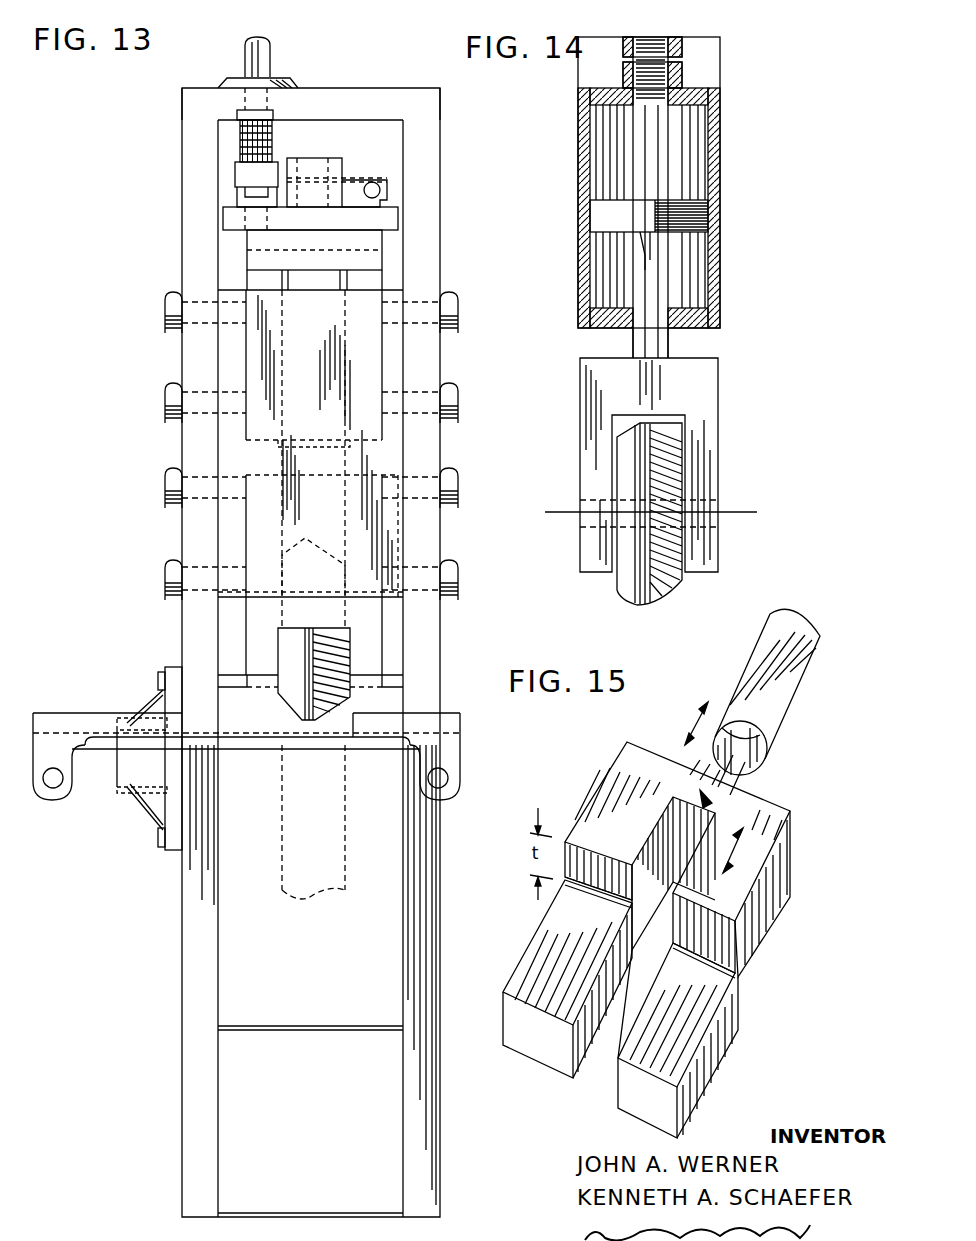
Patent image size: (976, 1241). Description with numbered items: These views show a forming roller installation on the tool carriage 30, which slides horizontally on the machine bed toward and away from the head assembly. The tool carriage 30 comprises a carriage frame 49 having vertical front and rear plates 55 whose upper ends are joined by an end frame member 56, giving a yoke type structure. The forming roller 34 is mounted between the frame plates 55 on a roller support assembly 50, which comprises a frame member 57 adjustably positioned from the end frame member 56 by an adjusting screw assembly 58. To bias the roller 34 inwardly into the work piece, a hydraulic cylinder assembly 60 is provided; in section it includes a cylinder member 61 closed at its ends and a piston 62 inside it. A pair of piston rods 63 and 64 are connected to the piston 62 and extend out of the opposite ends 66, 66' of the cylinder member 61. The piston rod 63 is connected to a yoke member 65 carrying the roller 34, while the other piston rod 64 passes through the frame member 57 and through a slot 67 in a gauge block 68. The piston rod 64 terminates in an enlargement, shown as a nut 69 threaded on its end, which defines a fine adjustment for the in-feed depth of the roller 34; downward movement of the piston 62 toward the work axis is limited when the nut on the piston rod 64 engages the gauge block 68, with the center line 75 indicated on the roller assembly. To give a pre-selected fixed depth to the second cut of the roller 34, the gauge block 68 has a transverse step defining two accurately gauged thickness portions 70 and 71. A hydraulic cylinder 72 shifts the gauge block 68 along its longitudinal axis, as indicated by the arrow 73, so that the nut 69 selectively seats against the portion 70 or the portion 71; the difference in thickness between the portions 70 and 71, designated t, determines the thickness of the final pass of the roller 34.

In FIG. 13, the tool carriage 30 is at (468, 340).
In FIG. 13, the forming roller 34 is at (350, 705).
In FIG. 14, the forming roller 34 is at (660, 585).
In FIG. 13, the carriage frame 49 is at (425, 440).
In FIG. 13, the roller support assembly 50 is at (395, 297).
In FIG. 13, the frame plates 55 is at (192, 160).
In FIG. 13, the end frame member 56 is at (372, 90).
In FIG. 13, the frame member 57 is at (400, 213).
In FIG. 13, the adjusting screw assembly 58 is at (270, 142).
In FIG. 13, the hydraulic cylinder assembly 60 is at (240, 258).
In FIG. 14, the hydraulic cylinder assembly 60 is at (728, 256).
In FIG. 14, the cylinder member 61 is at (712, 285).
In FIG. 14, the piston 62 is at (690, 217).
In FIG. 14, the piston rod 63 is at (660, 345).
In FIG. 14, the piston rod 64 is at (655, 170).
In FIG. 13, the yoke member 65 is at (430, 528).
In FIG. 14, the yoke member 65 is at (705, 398).
In FIG. 14, the cylinder end 66 is at (673, 93).
In FIG. 14, the cylinder end 66' is at (626, 332).
In FIG. 14, the slot 67 is at (682, 70).
In FIG. 15, the slot 67 is at (657, 950).
In FIG. 13, the gauge block 68 is at (350, 187).
In FIG. 14, the gauge block 68 is at (623, 67).
In FIG. 15, the gauge block 68 is at (778, 792).
In FIG. 13, the nut 69 is at (335, 163).
In FIG. 14, the nut 69 is at (682, 43).
In FIG. 15, the thickness portion 70 is at (690, 1010).
In FIG. 15, the thickness portion 71 is at (742, 885).
In FIG. 15, the hydraulic cylinder 72 is at (780, 713).
In FIG. 15, the arrow 73 is at (698, 718).
In FIG. 14, the center line 75 is at (732, 512).